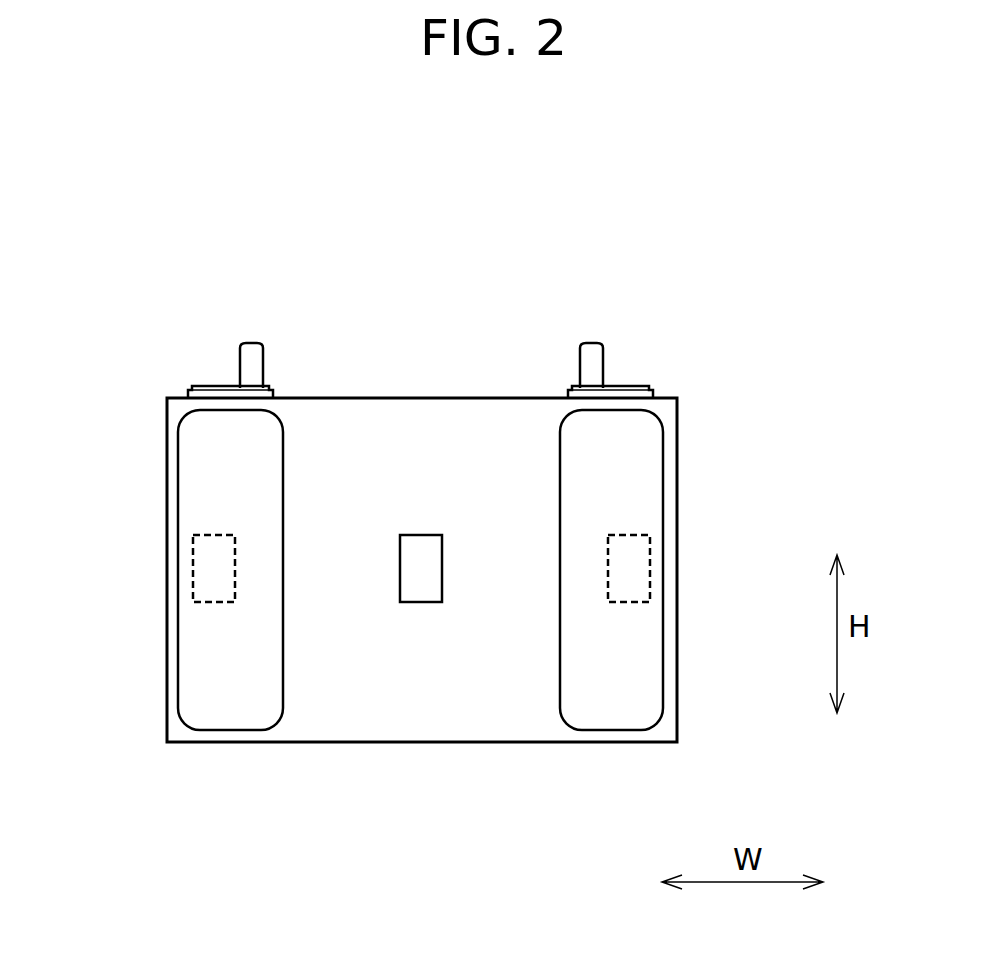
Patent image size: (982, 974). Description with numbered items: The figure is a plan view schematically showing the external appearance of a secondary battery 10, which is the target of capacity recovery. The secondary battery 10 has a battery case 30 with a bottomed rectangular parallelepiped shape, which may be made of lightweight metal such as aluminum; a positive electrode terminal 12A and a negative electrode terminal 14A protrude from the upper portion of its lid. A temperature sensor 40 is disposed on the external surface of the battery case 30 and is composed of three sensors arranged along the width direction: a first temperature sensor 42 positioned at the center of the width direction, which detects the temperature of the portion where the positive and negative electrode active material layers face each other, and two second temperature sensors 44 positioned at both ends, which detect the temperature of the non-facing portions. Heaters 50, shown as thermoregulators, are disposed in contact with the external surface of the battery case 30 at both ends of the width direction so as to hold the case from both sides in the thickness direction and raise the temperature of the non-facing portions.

The secondary battery 10 is at (723, 350).
The battery case 30 is at (163, 432).
The positive electrode terminal 12A is at (249, 343).
The negative electrode terminal 14A is at (590, 343).
The heaters 50 is at (198, 482).
The temperature sensor 40 is at (612, 810).
The first temperature sensor 42 is at (420, 603).
The second temperature sensors 44 is at (205, 603).